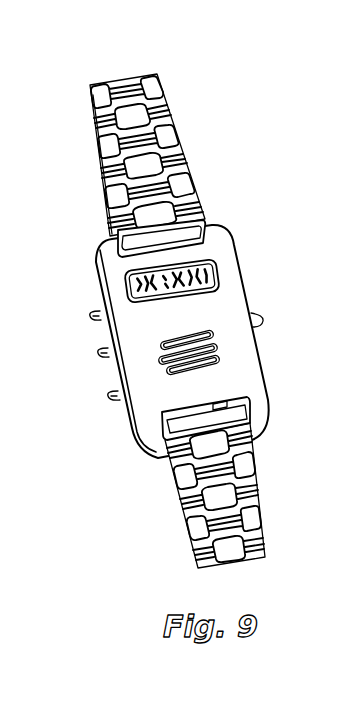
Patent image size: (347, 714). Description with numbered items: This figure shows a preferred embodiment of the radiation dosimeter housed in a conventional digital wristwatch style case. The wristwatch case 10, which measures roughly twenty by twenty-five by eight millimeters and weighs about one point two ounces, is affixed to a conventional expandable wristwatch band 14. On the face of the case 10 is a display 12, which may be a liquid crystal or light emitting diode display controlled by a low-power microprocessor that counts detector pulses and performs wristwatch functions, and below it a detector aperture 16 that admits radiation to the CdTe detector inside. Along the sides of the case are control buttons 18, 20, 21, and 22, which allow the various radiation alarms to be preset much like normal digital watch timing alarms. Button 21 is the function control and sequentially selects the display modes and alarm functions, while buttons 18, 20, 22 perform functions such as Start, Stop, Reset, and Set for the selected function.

The wristwatch case 10 is at (250, 288).
The display 12 is at (218, 254).
The expandable wristwatch band 14 is at (183, 183).
The detector aperture 16 is at (220, 346).
The control button 18 is at (90, 317).
The control button 20 is at (97, 352).
The function control button 21 is at (262, 318).
The control button 22 is at (107, 396).